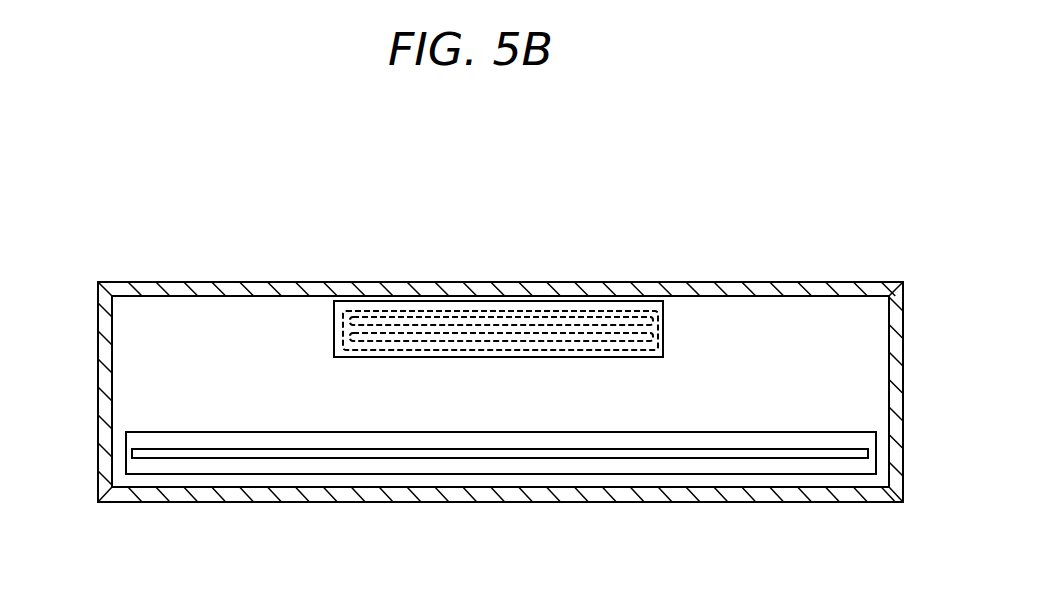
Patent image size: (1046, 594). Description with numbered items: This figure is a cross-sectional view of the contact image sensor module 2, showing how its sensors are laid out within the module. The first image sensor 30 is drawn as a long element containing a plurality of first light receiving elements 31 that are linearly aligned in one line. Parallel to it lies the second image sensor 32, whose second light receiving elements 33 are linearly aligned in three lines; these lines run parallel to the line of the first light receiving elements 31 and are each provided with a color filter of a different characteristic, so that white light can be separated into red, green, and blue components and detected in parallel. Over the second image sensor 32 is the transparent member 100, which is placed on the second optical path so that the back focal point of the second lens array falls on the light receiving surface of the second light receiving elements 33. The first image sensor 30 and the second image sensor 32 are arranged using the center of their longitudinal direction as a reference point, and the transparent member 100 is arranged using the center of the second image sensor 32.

The contact image sensor module 2 is at (868, 254).
The first image sensor 30 is at (333, 463).
The first light receiving elements 31 is at (422, 453).
The second image sensor 32 is at (383, 308).
The second light receiving elements 33 is at (470, 315).
The transparent member 100 is at (334, 327).